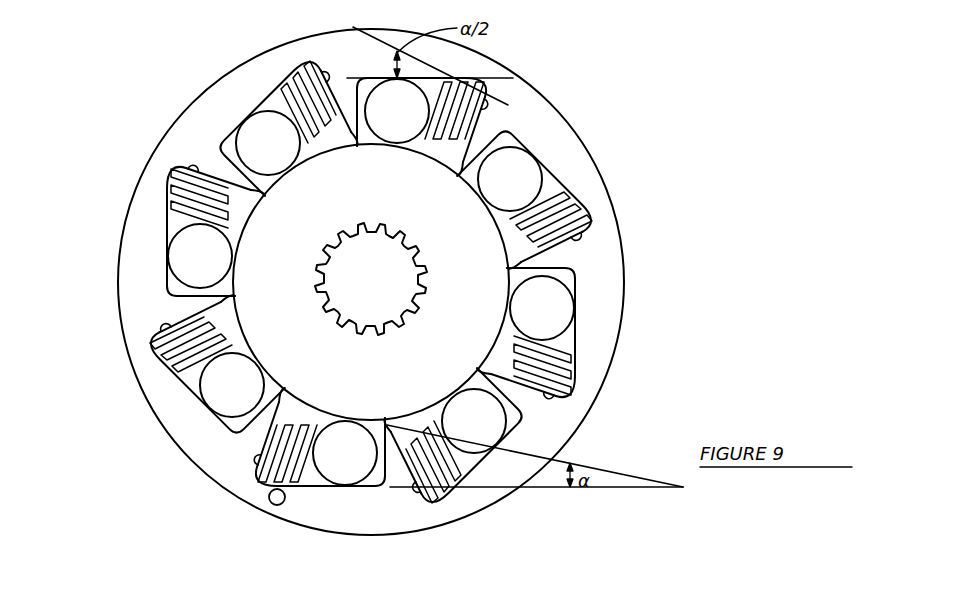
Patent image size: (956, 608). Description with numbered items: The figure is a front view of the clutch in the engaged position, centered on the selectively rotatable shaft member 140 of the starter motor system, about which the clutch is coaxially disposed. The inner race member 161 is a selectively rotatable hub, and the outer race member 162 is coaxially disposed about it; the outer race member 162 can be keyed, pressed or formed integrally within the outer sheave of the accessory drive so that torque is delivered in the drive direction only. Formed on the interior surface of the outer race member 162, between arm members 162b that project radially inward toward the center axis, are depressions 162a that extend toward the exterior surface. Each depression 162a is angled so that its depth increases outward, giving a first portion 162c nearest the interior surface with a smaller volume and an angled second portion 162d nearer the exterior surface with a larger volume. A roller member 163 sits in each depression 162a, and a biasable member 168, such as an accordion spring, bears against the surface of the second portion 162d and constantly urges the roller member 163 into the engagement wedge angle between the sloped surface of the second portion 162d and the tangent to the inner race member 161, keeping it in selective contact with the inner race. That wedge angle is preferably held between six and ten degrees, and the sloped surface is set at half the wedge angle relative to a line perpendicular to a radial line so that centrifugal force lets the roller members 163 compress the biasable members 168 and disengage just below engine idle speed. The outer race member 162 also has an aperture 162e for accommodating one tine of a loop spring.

The shaft member 140 is at (371, 325).
The inner race member 161 is at (260, 433).
The outer race member 162 is at (178, 61).
The depression 162a is at (241, 104).
The arm member 162b is at (339, 95).
The first portion of the depression 162c is at (223, 150).
The second portion of the depression 162d is at (297, 77).
The aperture 162e is at (272, 505).
The roller member 163 is at (282, 157).
The biasable member 168 is at (320, 150).